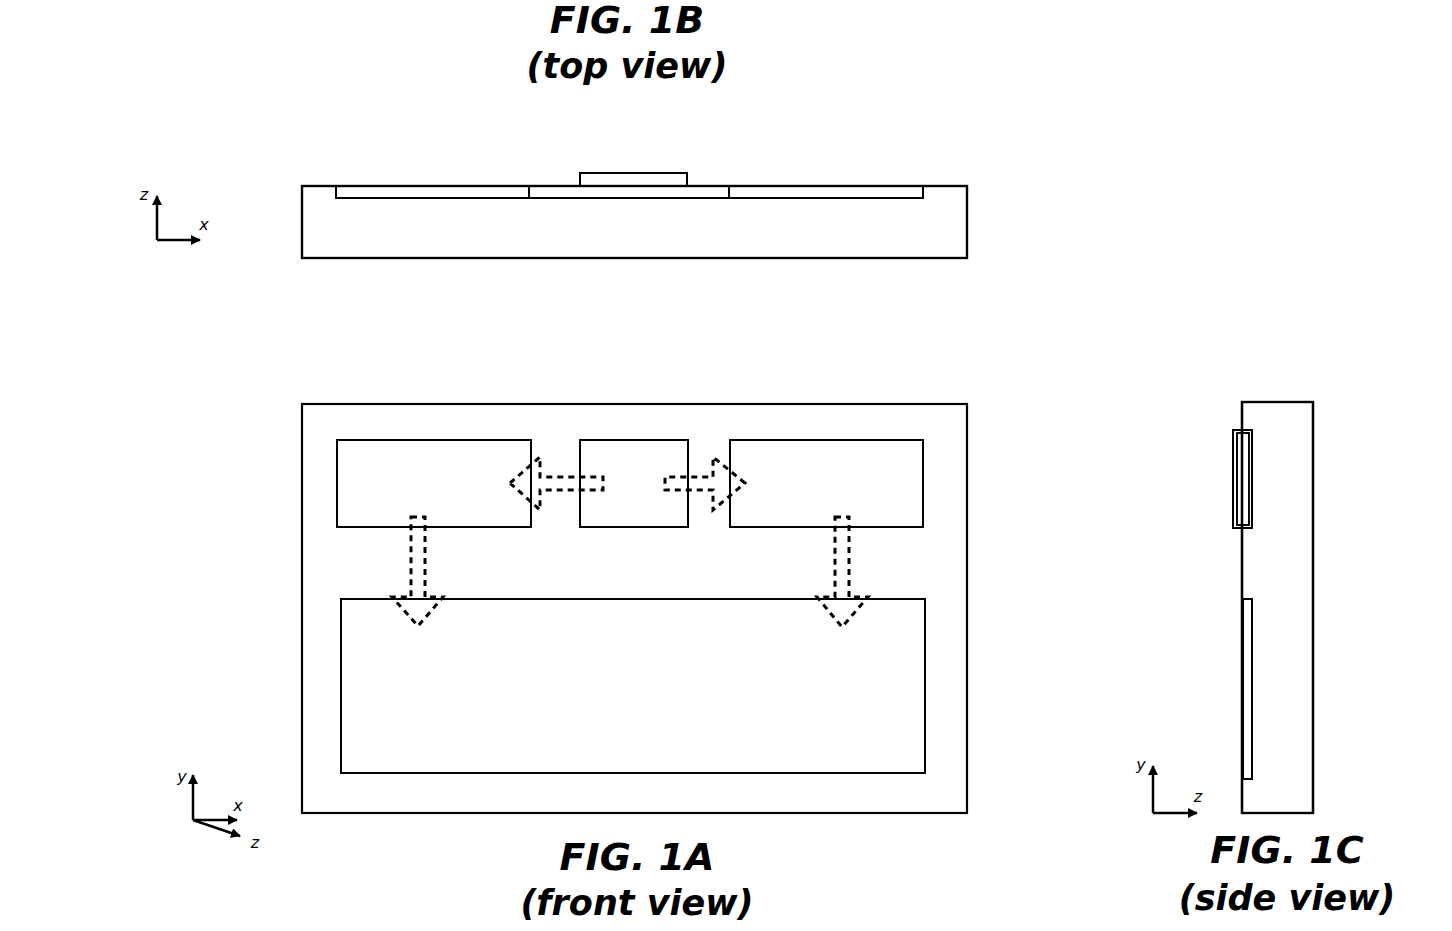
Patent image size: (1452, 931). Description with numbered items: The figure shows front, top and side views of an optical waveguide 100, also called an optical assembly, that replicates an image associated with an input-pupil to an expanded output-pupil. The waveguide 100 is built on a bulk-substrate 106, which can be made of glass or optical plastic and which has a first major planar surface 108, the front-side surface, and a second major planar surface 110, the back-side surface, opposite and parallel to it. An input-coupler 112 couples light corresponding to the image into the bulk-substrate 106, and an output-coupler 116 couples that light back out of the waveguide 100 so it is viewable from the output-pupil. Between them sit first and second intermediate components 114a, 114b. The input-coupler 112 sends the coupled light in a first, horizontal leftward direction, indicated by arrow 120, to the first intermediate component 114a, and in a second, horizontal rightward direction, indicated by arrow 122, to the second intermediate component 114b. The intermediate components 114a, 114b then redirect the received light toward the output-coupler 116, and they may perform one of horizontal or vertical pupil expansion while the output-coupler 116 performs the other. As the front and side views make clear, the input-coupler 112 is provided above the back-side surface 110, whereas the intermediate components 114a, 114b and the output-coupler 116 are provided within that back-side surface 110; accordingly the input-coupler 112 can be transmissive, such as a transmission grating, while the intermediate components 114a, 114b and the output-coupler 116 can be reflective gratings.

In FIG. 1B, the optical waveguide 100 is at (262, 205).
In FIG. 1A, the optical waveguide 100 is at (262, 439).
In FIG. 1C, the optical waveguide 100 is at (1372, 460).
In FIG. 1B, the bulk-substrate 106 is at (962, 215).
In FIG. 1C, the bulk-substrate 106 is at (1274, 404).
In FIG. 1B, the first major planar surface 108 is at (962, 259).
In FIG. 1C, the first major planar surface 108 is at (1313, 420).
In FIG. 1B, the second major planar surface 110 is at (968, 186).
In FIG. 1C, the second major planar surface 110 is at (1242, 410).
In FIG. 1B, the input-coupler 112 is at (636, 173).
In FIG. 1A, the input-coupler 112 is at (634, 483).
In FIG. 1C, the input-coupler 112 is at (1233, 480).
In FIG. 1B, the first intermediate component 114a is at (412, 184).
In FIG. 1A, the first intermediate component 114a is at (434, 483).
In FIG. 1C, the first intermediate component 114a is at (1252, 505).
In FIG. 1B, the second intermediate component 114b is at (830, 184).
In FIG. 1A, the second intermediate component 114b is at (826, 483).
In FIG. 1C, the second intermediate component 114b is at (1243, 479).
In FIG. 1B, the output-coupler 116 is at (708, 184).
In FIG. 1A, the output-coupler 116 is at (633, 686).
In FIG. 1C, the output-coupler 116 is at (1243, 685).
In FIG. 1A, the arrow indicating first direction 120 is at (552, 470).
In FIG. 1A, the arrow indicating second direction 122 is at (701, 470).